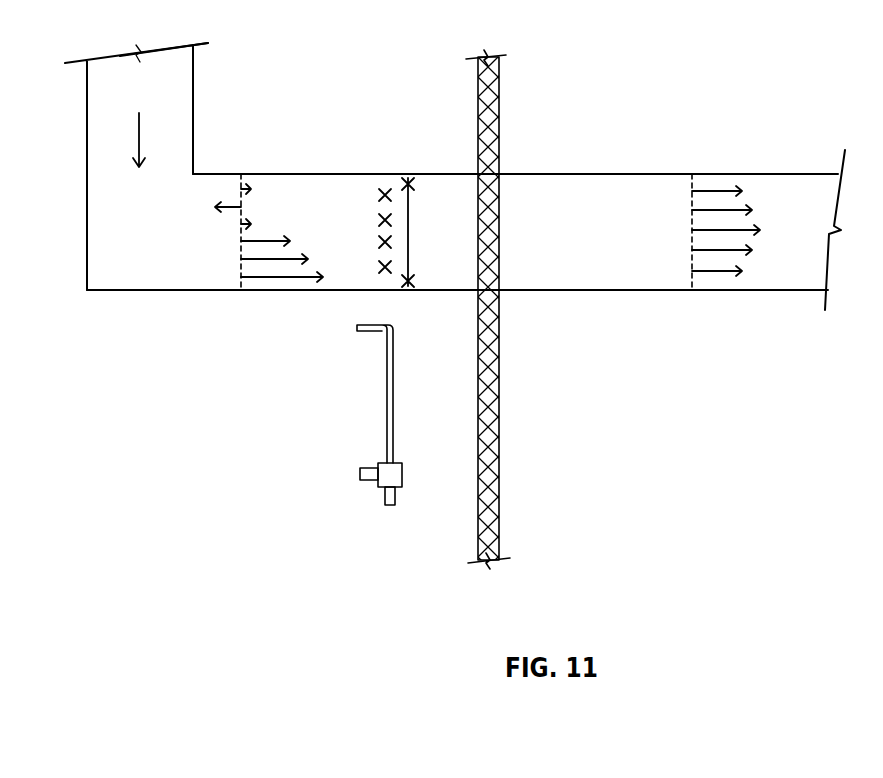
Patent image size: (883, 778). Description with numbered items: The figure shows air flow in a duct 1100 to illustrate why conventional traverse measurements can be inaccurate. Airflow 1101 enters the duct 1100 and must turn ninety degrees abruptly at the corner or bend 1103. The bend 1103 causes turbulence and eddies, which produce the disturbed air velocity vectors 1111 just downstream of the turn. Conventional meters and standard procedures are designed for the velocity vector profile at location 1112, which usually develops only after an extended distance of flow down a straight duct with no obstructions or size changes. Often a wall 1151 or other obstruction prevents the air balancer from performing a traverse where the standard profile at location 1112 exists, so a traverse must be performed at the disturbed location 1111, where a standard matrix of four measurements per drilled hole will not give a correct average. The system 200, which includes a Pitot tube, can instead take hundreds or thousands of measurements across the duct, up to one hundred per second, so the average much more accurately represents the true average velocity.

The inlet wall 1100 is at (193, 68).
The airflow 1101 is at (139, 138).
The bend 1103 is at (125, 277).
The air velocity vectors 1111 is at (217, 192).
The location of standard velocity vector profile 1112 is at (680, 188).
The wall 1151 is at (487, 140).
The system 200 is at (380, 435).